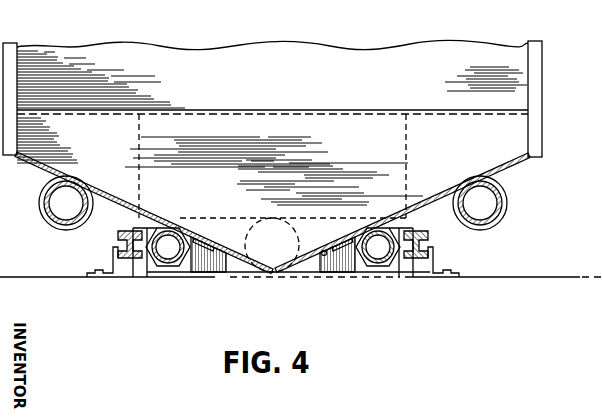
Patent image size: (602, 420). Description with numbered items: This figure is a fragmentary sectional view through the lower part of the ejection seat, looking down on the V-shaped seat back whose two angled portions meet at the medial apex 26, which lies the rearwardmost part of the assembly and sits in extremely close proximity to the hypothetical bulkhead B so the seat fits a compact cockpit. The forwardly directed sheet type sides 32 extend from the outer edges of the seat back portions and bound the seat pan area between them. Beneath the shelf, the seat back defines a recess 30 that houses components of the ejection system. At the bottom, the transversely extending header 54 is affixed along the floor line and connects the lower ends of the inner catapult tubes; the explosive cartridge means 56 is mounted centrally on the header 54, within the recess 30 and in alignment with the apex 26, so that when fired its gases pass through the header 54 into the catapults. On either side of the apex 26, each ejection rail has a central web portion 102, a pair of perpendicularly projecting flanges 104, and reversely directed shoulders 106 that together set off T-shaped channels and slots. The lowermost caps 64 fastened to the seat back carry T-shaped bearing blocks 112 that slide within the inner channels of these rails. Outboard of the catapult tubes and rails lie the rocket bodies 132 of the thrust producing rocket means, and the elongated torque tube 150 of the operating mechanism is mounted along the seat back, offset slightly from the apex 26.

The recess 30 is at (385, 200).
The sheet type sides 32 is at (540, 91).
The medial apex 26 is at (272, 273).
The rocket body 132 is at (507, 190).
The hypothetical bulkhead B is at (528, 278).
The bearing block 112 is at (143, 258).
The caps 64 is at (184, 268).
The header 54 is at (223, 258).
The explosive cartridge means 56 is at (290, 268).
The torque tube 150 is at (326, 257).
The central web portion 102 is at (412, 262).
The flanges 104 is at (438, 235).
The shoulder 106 is at (440, 252).